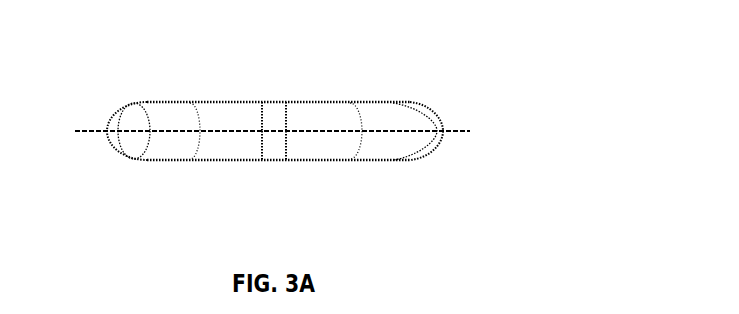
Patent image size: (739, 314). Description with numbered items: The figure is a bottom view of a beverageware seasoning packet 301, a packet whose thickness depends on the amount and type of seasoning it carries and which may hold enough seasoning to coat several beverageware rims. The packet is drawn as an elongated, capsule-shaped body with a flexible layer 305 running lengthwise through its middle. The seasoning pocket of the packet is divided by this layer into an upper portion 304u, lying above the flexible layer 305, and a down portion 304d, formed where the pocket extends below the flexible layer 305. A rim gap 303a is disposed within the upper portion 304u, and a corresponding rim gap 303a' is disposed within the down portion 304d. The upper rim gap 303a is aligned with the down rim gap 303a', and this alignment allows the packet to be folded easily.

The beverageware seasoning packet 301 is at (440, 78).
The rim gap 303a is at (272, 83).
The rim gap 303a' is at (280, 178).
The upper portion of pocket 304u is at (155, 107).
The down portion of pocket 304d is at (143, 145).
The flexible layer 305 is at (490, 131).